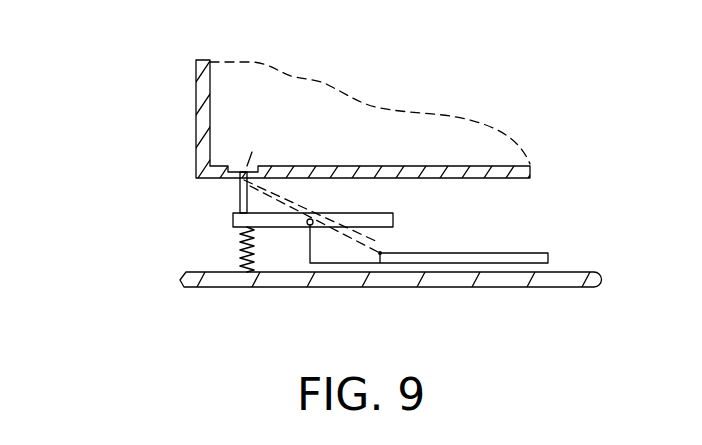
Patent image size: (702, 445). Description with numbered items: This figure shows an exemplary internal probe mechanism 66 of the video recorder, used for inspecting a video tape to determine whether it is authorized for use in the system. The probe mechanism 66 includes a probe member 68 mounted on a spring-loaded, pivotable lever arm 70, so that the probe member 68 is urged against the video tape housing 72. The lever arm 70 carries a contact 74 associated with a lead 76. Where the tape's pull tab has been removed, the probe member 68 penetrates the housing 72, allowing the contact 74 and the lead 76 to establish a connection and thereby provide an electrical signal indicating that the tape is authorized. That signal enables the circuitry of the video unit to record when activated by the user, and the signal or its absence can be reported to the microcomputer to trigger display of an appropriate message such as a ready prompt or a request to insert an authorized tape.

The probe mechanism 66 is at (160, 246).
The probe member 68 is at (240, 202).
The lever arm 70 is at (288, 228).
The video tape housing 72 is at (383, 165).
The contact 74 is at (387, 227).
The lead 76 is at (518, 253).